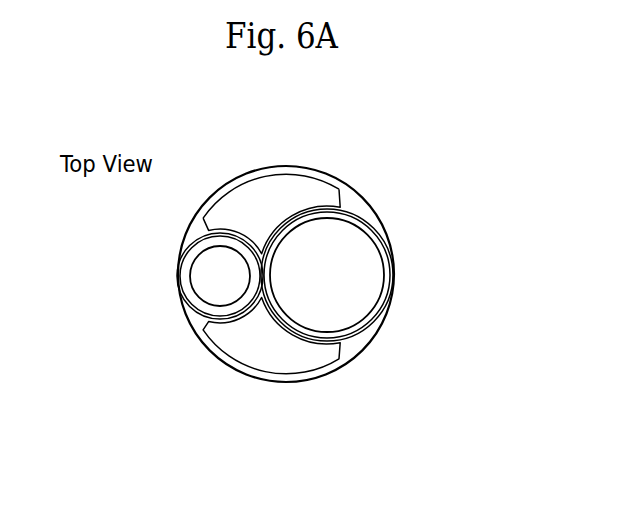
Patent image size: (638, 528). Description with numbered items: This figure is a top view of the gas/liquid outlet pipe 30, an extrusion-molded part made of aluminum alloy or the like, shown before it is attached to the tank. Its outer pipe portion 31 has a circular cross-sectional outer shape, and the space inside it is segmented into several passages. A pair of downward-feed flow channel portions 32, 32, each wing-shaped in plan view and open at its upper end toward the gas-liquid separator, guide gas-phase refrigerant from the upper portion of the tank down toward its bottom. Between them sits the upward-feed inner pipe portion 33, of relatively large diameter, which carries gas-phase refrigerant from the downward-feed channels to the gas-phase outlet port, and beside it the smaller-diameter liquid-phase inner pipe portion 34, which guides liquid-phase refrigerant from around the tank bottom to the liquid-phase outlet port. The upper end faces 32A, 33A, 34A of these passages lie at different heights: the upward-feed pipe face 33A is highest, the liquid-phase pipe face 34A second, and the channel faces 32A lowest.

The gas/liquid outlet pipe 30 is at (355, 274).
The outer pipe portion 31 is at (401, 279).
The downward-feed flow channel portion 32 is at (316, 188).
The upper end face of the downward-feed flow channel portion 32A is at (303, 174).
The upward-feed inner pipe portion 33 is at (340, 327).
The upper end face of the upward-feed inner pipe portion 33A is at (370, 236).
The liquid-phase inner pipe portion 34 is at (191, 283).
The upper end face of the liquid-phase inner pipe portion 34A is at (188, 309).